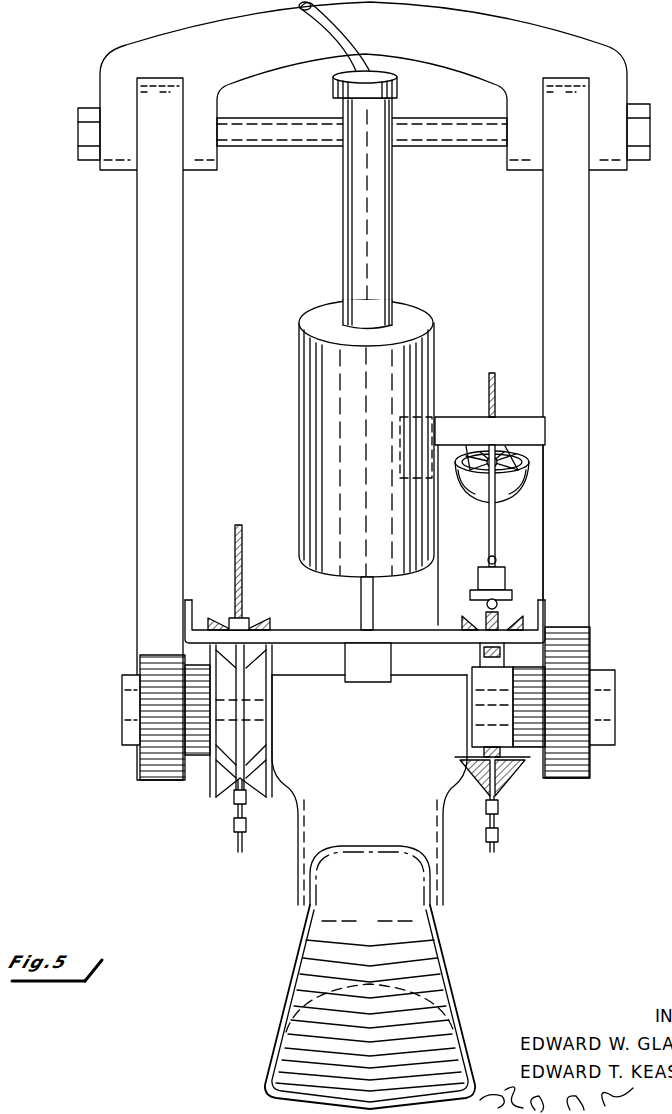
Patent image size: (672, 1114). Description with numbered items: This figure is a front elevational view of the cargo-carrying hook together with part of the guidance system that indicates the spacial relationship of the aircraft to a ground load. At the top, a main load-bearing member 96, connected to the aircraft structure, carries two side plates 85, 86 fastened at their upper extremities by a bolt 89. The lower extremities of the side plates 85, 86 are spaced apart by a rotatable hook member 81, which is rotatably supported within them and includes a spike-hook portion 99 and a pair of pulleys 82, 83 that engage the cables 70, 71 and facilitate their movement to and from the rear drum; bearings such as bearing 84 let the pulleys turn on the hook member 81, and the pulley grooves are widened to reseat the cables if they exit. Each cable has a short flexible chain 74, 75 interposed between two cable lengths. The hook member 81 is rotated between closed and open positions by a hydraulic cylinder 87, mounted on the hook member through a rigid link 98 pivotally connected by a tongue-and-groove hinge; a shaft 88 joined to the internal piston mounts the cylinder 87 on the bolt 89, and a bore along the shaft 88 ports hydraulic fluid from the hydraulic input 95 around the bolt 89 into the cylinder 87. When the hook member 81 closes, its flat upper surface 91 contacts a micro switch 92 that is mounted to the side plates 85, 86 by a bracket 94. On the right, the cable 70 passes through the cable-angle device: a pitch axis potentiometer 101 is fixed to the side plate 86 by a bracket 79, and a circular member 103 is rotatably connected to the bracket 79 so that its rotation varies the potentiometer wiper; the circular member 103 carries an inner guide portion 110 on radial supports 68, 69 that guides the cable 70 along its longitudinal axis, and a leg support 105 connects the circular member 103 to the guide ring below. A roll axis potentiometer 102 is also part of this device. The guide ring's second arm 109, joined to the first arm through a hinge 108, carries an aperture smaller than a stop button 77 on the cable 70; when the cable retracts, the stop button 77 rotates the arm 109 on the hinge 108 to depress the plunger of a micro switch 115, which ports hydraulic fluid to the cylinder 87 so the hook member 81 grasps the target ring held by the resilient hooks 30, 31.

The resilient hook 30 is at (462, 616).
The resilient hook 31 is at (230, 616).
The radial support 68 is at (470, 450).
The radial support 69 is at (508, 450).
The cable 70 is at (494, 374).
The cable 71 is at (234, 536).
The flexible chain 74 is at (506, 824).
The flexible chain 75 is at (233, 836).
The stop button 77 is at (486, 604).
The bracket 79 is at (536, 428).
The rotatable hook member 81 is at (204, 770).
The pulley 82 is at (470, 794).
The pulley 83 is at (266, 802).
The bearing 84 is at (528, 780).
The side plate 85 is at (137, 318).
The side plate 86 is at (585, 244).
The hydraulic cylinder 87 is at (299, 384).
The shaft 88 is at (343, 178).
The bolt 89 is at (247, 146).
The flat upper surface 91 is at (305, 676).
The micro switch 92 is at (378, 677).
The bracket 94 is at (306, 632).
The hydraulic input 95 is at (304, 36).
The main load-bearing member 96 is at (136, 42).
The rigid link 98 is at (361, 597).
The spike-hook portion 99 is at (293, 972).
The pitch axis potentiometer 101 is at (432, 417).
The roll axis potentiometer 102 is at (486, 494).
The circular member 103 is at (458, 480).
The leg support 105 is at (494, 505).
The hinge 108 is at (478, 582).
The second arm 109 is at (510, 590).
The inner guide portion 110 is at (526, 480).
The micro switch 115 is at (503, 562).